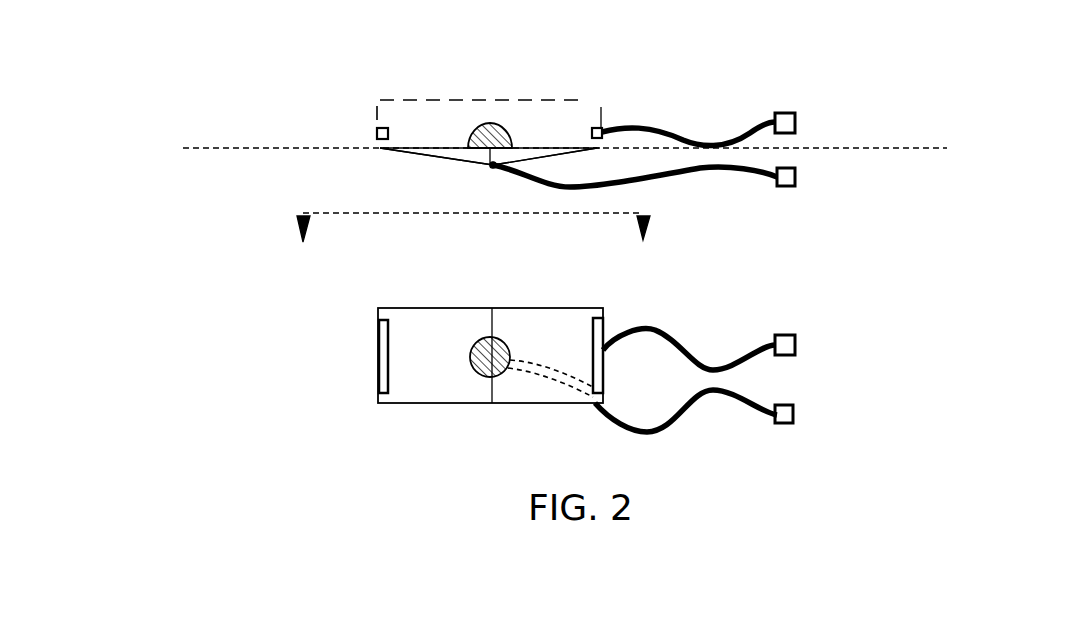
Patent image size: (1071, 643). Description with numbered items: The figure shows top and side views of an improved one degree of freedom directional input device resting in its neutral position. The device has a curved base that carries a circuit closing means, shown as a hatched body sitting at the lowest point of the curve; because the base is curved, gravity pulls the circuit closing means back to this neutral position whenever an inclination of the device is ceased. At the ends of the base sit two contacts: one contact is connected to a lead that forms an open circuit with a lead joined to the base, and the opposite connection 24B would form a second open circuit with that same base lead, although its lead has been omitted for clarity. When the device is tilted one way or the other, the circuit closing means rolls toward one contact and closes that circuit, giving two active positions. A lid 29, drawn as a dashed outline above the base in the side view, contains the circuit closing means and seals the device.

The connection 24B is at (378, 363).
The lid 29 is at (448, 100).